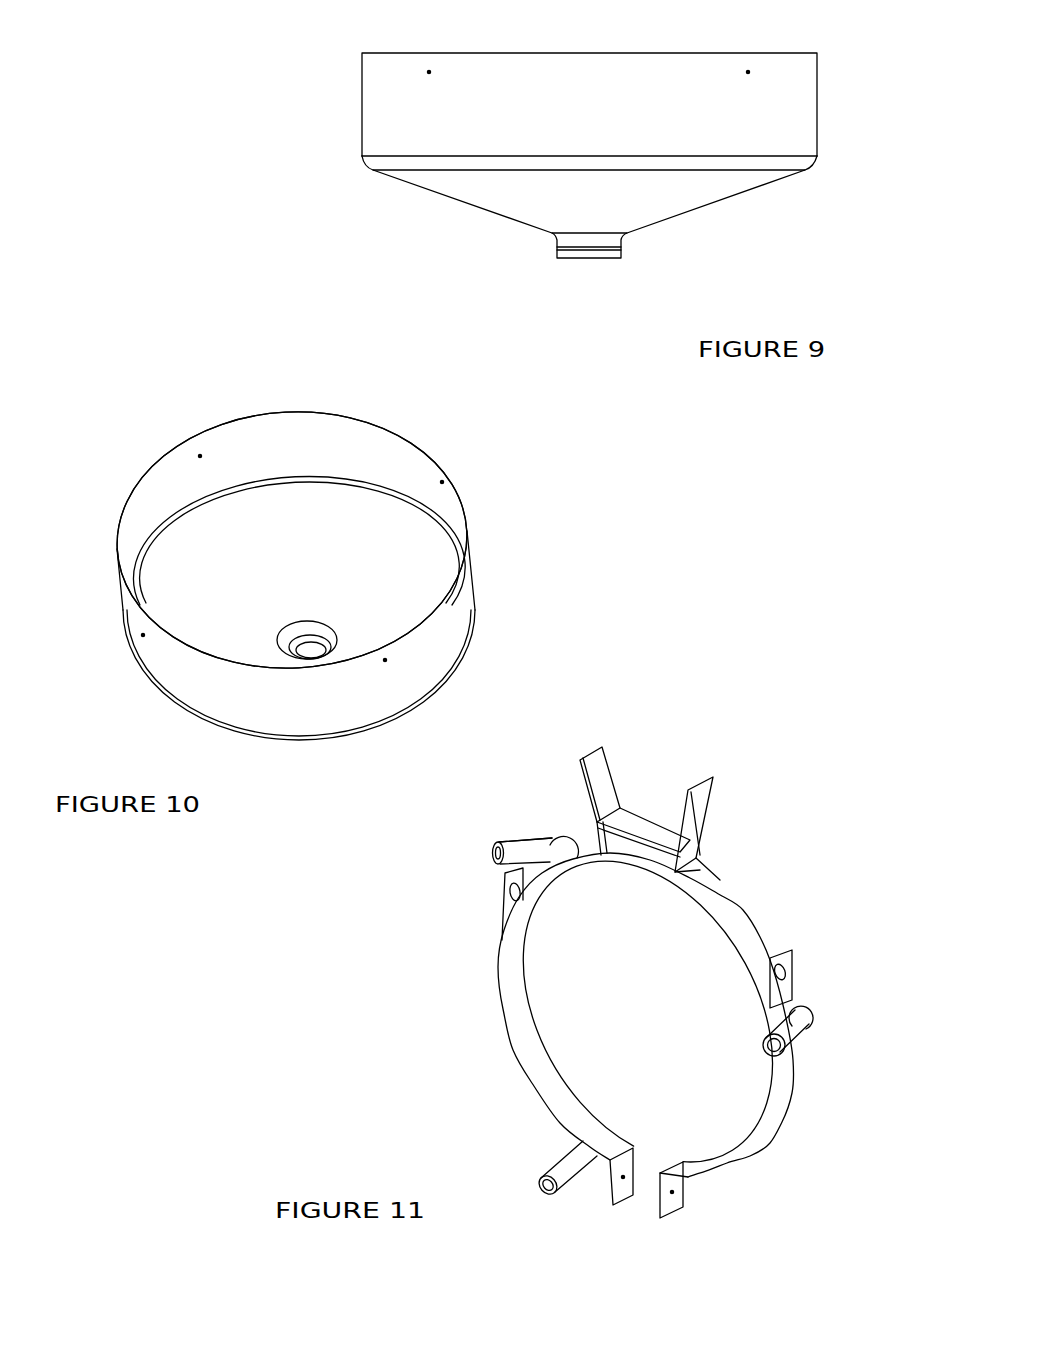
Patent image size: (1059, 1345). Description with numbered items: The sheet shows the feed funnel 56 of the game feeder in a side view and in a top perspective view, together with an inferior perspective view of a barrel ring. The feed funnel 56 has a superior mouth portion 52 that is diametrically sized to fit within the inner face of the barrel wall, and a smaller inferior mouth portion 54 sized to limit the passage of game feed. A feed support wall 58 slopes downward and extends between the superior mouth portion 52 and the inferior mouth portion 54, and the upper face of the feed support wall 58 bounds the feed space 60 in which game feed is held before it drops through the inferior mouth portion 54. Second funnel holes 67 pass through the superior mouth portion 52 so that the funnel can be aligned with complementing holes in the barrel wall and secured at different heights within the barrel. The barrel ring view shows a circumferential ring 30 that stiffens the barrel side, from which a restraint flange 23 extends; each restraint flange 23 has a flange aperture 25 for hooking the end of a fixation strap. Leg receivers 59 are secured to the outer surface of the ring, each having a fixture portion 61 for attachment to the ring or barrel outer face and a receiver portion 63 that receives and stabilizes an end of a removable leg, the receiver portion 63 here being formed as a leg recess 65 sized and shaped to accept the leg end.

In FIG. 9, the superior mouth portion 52 is at (385, 48).
In FIG. 10, the superior mouth portion 52 is at (307, 446).
In FIG. 9, the second funnel hole 67 is at (748, 72).
In FIG. 10, the second funnel hole 67 is at (200, 456).
In FIG. 9, the feed support wall 58 is at (500, 201).
In FIG. 10, the feed support wall 58 is at (205, 581).
In FIG. 9, the inferior mouth portion 54 is at (575, 263).
In FIG. 10, the inferior mouth portion 54 is at (303, 652).
In FIG. 10, the feed funnel 56 is at (404, 407).
In FIG. 10, the feed space 60 is at (410, 570).
In FIG. 11, the expansion ring 30 is at (622, 934).
In FIG. 11, the restraint flange 23 is at (503, 911).
In FIG. 11, the flange aperture 25 is at (503, 892).
In FIG. 11, the leg receiver 59 is at (524, 845).
In FIG. 11, the fixture portion 61 is at (562, 845).
In FIG. 11, the receiver portion 63 is at (518, 844).
In FIG. 11, the leg recess 65 is at (497, 853).